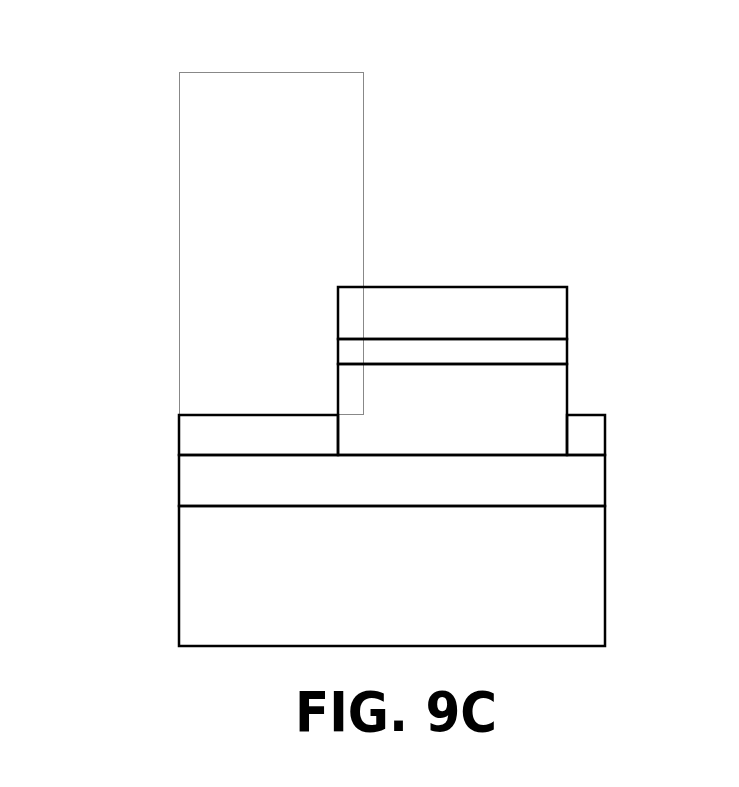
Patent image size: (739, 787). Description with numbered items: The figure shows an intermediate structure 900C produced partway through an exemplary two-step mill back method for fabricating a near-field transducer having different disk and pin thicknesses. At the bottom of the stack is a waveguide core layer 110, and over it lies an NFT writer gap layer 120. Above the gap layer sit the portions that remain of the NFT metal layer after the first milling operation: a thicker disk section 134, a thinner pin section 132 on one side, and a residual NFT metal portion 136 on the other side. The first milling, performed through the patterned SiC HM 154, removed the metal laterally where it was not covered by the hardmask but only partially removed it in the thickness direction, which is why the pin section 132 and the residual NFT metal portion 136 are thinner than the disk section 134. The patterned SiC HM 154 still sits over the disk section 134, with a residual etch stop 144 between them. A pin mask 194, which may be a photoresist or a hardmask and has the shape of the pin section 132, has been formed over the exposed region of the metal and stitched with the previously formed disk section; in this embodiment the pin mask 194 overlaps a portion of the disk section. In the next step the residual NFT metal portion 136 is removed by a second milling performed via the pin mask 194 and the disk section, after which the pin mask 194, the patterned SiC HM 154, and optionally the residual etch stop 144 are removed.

The semiconductor device structure 900C is at (136, 66).
The mask layer 194 is at (348, 150).
The top electrode layer 154 is at (452, 313).
The switching layer 144 is at (452, 351).
The bottom electrode layer 134 is at (452, 409).
The dielectric layer 132 is at (258, 435).
The dielectric layer 136 is at (588, 436).
The interlayer dielectric 120 is at (392, 480).
The substrate 110 is at (392, 576).